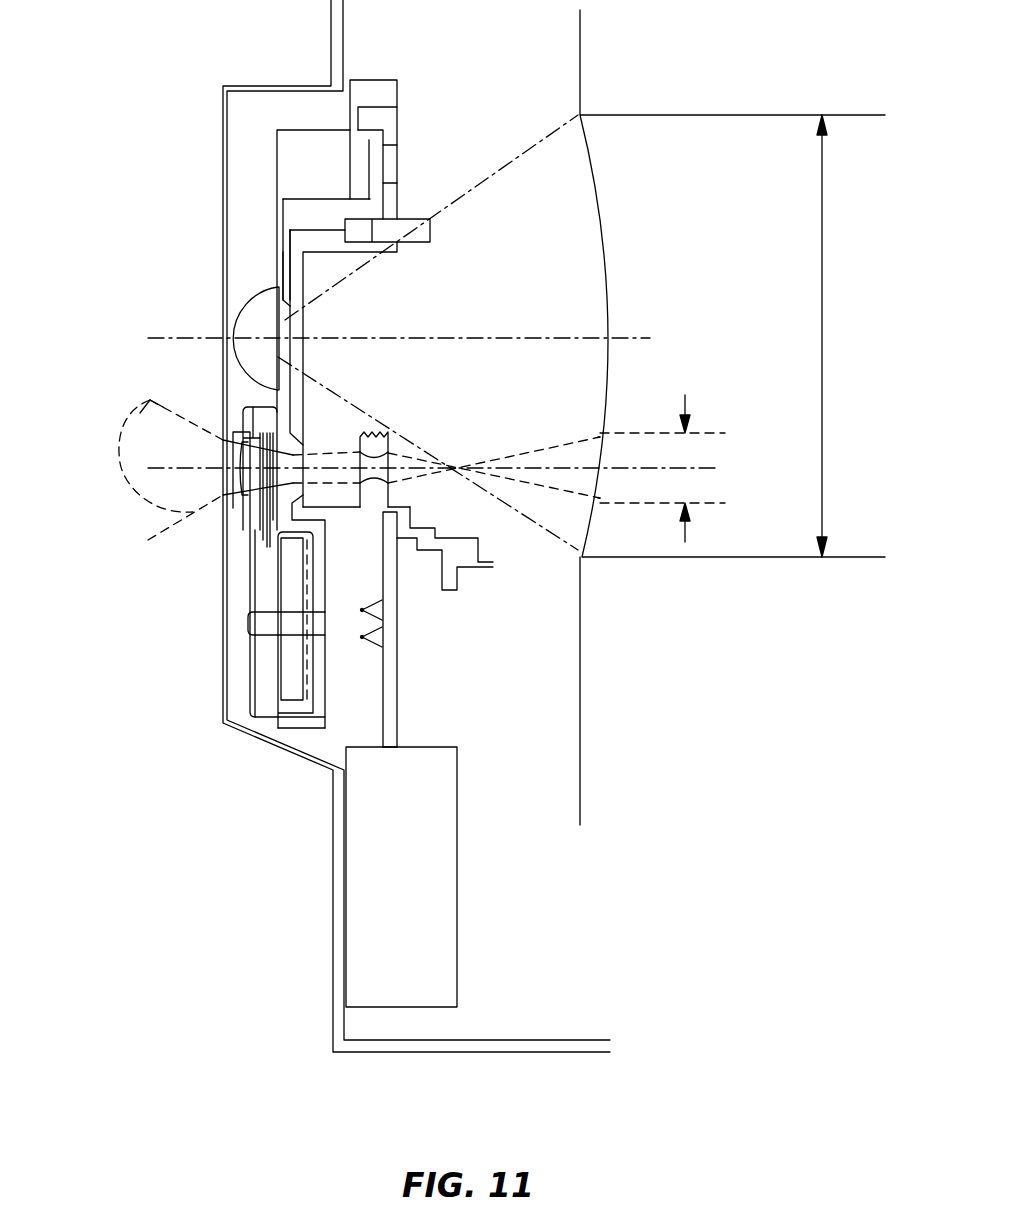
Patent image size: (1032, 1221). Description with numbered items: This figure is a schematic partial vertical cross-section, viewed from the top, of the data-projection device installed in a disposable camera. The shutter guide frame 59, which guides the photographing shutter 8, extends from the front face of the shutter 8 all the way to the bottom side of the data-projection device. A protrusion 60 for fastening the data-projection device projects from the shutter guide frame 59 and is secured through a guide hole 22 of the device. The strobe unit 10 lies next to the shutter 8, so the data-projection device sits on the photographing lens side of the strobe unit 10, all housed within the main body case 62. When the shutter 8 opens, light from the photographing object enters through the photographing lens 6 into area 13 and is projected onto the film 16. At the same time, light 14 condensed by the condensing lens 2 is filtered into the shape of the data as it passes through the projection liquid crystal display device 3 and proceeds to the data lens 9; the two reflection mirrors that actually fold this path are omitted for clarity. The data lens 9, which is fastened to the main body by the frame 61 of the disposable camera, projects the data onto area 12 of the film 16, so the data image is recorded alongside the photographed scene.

The shutter guide frame 59 is at (323, 145).
The photographing shutter 8 is at (313, 242).
The photographing lens 6 is at (225, 333).
The projection liquid crystal display device 3 is at (255, 440).
The condensing lens 2 is at (225, 495).
The light 14 is at (122, 463).
The data lens 9 is at (360, 452).
The frame 61 is at (455, 558).
The strobe unit 10 is at (390, 728).
The guide hole 22 is at (265, 650).
The protrusion 60 is at (263, 623).
The main body case 62 is at (475, 1052).
The film 16 is at (585, 728).
The area 13 is at (822, 423).
The area 12 is at (688, 457).